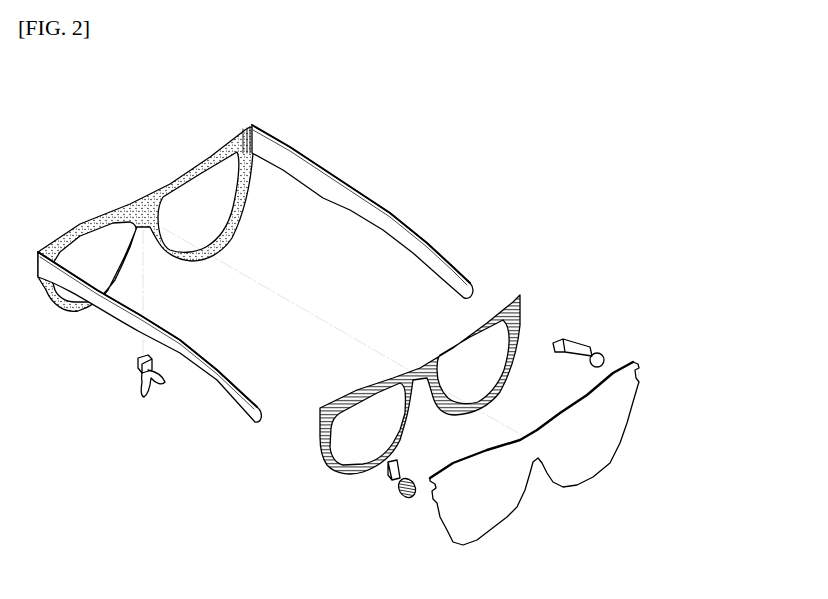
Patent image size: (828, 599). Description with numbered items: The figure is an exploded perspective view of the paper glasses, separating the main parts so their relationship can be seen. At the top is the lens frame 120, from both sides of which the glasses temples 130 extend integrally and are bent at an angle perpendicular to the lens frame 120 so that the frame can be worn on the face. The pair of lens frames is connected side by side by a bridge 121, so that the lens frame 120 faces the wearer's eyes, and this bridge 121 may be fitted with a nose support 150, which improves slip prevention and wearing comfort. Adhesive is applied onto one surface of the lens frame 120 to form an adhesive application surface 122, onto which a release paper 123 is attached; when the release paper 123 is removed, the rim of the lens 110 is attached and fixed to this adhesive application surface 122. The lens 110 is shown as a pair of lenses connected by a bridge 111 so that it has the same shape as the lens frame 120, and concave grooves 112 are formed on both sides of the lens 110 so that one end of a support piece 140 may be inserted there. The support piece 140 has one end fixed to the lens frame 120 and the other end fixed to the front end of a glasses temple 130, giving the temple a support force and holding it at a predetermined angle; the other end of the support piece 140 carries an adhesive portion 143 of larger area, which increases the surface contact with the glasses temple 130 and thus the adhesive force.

The lens 110 is at (549, 456).
The bridge 111 is at (535, 440).
The concave grooves 112 is at (637, 376).
The lens frame 120 is at (203, 153).
The bridge 121 is at (140, 200).
The adhesive application surface 122 is at (228, 148).
The release paper 123 is at (507, 300).
The glasses temples 130 is at (302, 171).
The support piece 140 is at (570, 345).
The adhesive portion 143 is at (599, 353).
The nose support 150 is at (140, 388).